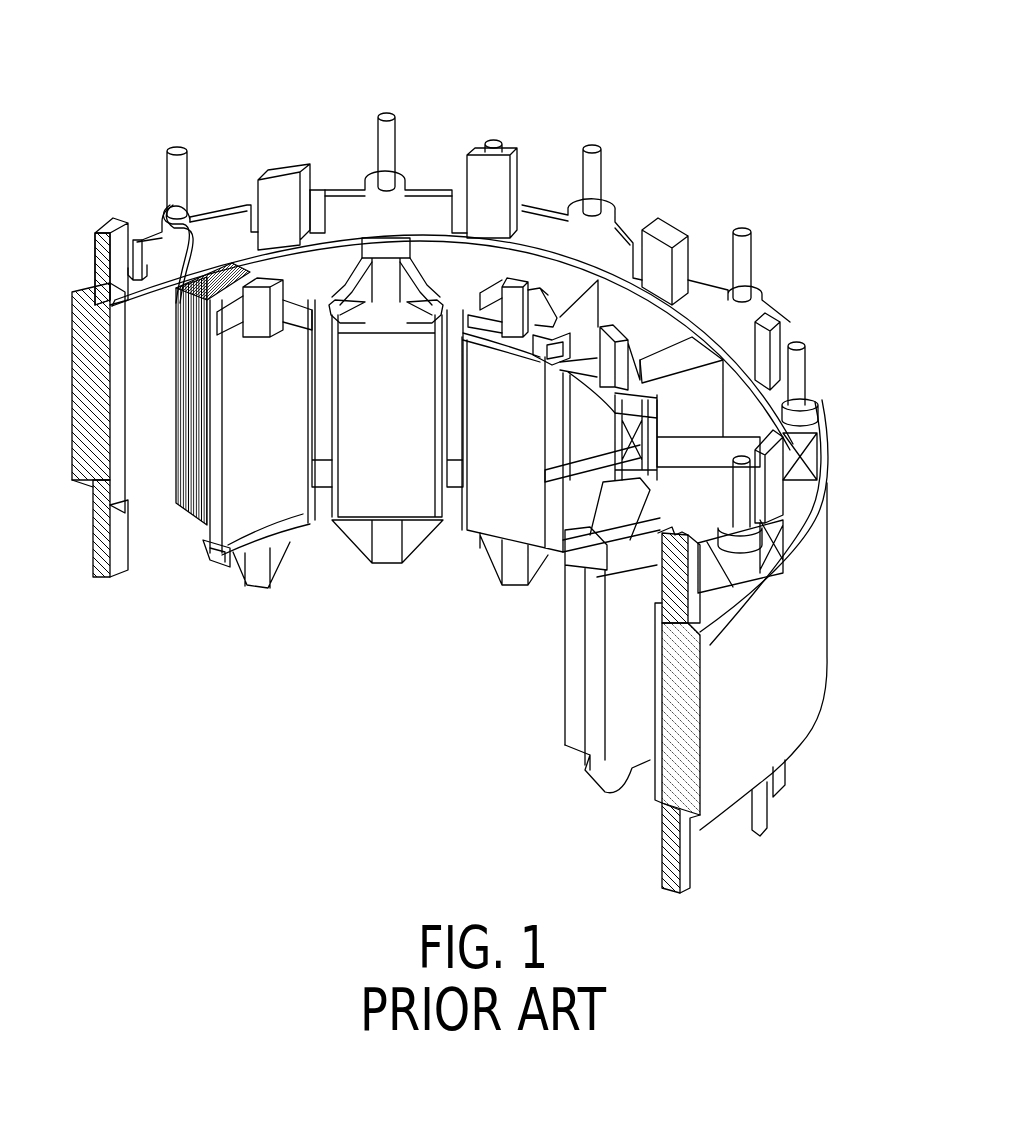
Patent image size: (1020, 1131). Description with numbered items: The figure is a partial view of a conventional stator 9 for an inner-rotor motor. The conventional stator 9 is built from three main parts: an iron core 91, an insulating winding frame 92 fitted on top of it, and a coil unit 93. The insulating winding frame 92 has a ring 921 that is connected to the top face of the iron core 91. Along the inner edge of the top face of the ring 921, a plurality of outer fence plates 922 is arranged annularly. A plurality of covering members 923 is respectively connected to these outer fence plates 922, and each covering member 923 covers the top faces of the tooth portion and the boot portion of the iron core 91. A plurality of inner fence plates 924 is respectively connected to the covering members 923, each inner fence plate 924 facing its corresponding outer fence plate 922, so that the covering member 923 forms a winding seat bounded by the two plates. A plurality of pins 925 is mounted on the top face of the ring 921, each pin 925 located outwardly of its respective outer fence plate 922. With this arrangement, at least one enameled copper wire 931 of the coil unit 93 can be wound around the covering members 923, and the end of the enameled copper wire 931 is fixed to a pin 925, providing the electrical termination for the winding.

The conventional stator 9 is at (578, 68).
The iron core 91 is at (808, 638).
The insulating winding frame 92 is at (830, 352).
The ring 921 is at (798, 493).
The outer fence plates 922 is at (228, 204).
The covering members 923 is at (668, 360).
The inner fence plates 924 is at (260, 300).
The pins 925 is at (175, 165).
The coil unit 93 is at (190, 455).
The enameled copper wire 931 is at (159, 247).